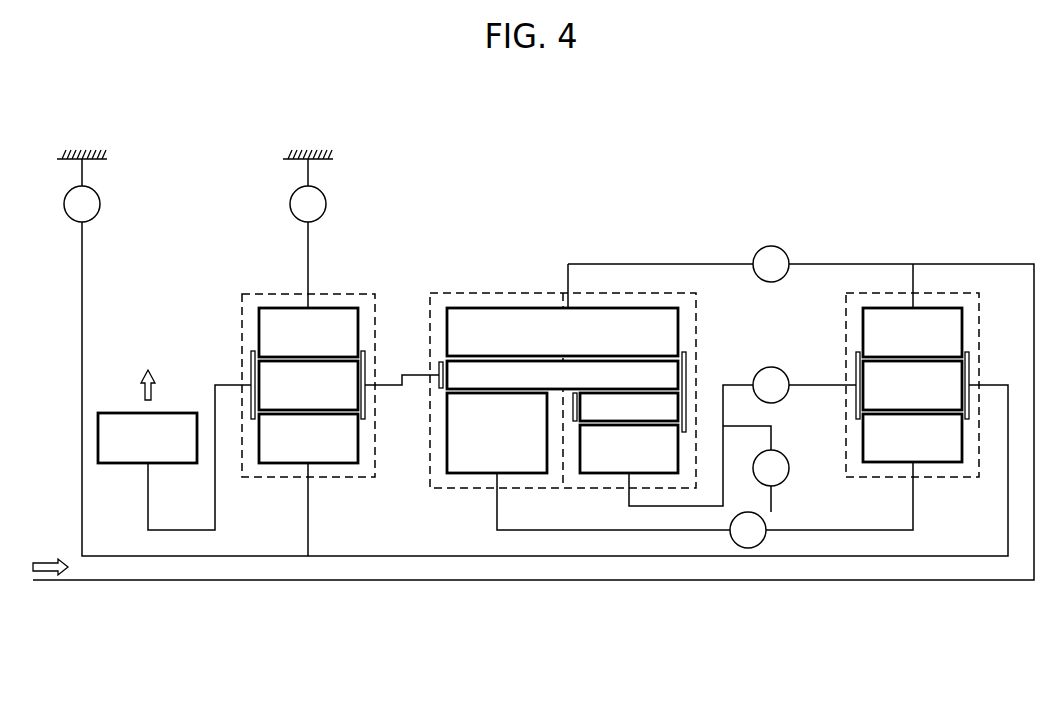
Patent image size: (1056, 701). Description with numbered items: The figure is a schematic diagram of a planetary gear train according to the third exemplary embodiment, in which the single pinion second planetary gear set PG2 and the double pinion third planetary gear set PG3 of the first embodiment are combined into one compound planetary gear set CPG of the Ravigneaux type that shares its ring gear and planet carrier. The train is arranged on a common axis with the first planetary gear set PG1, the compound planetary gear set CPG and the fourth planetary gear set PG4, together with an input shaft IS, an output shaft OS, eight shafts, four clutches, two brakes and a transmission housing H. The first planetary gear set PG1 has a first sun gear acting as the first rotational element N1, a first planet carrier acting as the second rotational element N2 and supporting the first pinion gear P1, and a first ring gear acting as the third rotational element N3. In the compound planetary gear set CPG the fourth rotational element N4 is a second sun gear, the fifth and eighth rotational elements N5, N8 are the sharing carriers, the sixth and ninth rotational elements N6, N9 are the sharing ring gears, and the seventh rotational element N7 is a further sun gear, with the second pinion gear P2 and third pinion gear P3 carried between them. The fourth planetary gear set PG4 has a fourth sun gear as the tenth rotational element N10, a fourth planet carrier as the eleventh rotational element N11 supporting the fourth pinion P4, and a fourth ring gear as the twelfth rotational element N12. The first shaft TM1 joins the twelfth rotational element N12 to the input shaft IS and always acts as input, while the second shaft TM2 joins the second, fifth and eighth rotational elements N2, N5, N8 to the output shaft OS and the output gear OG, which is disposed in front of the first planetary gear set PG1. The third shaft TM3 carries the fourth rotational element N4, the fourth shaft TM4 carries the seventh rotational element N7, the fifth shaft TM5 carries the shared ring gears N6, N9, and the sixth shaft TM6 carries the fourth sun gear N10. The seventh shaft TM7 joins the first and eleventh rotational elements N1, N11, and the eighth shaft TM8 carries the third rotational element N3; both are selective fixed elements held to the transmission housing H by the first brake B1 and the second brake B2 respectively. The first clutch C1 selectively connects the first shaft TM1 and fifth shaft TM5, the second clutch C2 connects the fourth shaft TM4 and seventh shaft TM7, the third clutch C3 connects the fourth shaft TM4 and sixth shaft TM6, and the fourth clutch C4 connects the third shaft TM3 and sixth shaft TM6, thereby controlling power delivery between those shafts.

The transmission housing H is at (86, 150).
The first shaft TM1 is at (981, 264).
The second shaft TM2 is at (413, 374).
The third shaft TM3 is at (650, 530).
The fourth shaft TM4 is at (708, 506).
The fifth shaft TM5 is at (670, 264).
The sixth shaft TM6 is at (818, 532).
The seventh shaft TM7 is at (82, 258).
The eighth shaft TM8 is at (308, 258).
The input shaft IS is at (82, 580).
The output shaft OS is at (172, 530).
The output gear OG is at (147, 438).
The first planetary gear set PG1 is at (284, 482).
The second planetary gear set PG2 is at (497, 530).
The third planetary gear set PG3 is at (622, 530).
The fourth planetary gear set PG4 is at (887, 481).
The compound planetary gear set CPG is at (598, 492).
The first rotational element N1 is at (308, 438).
The second rotational element N2 is at (253, 352).
The third rotational element N3 is at (308, 332).
The fourth rotational element N4 is at (497, 433).
The fifth rotational element N5 is at (724, 371).
The sixth rotational element N6 is at (562, 332).
The seventh rotational element N7 is at (629, 449).
The eighth rotational element N8 is at (684, 352).
The ninth rotational element N9 is at (562, 332).
The tenth rotational element N10 is at (912, 438).
The eleventh rotational element N11 is at (858, 352).
The twelfth rotational element N12 is at (912, 332).
The first pinion gear P1 is at (308, 385).
The second pinion gear P2 is at (558, 375).
The third pinion gear P3 is at (625, 407).
The fourth pinion P4 is at (912, 385).
The first brake B1 is at (82, 204).
The second brake B2 is at (308, 204).
The first clutch C1 is at (771, 264).
The second clutch C2 is at (771, 385).
The third clutch C3 is at (771, 468).
The fourth clutch C4 is at (748, 530).